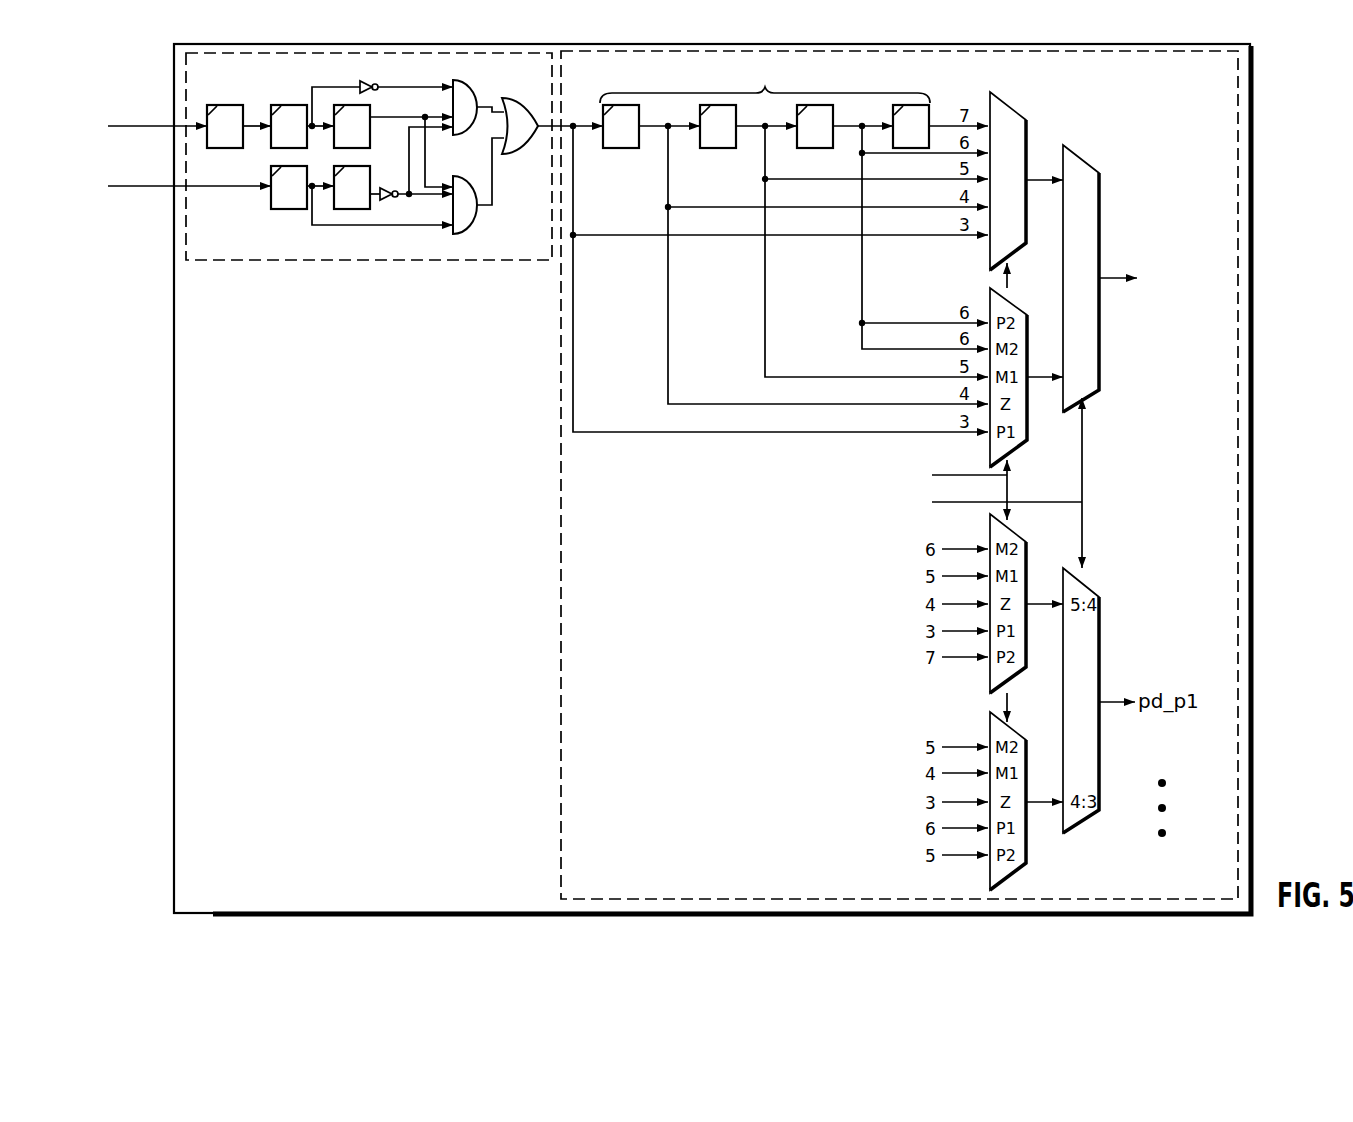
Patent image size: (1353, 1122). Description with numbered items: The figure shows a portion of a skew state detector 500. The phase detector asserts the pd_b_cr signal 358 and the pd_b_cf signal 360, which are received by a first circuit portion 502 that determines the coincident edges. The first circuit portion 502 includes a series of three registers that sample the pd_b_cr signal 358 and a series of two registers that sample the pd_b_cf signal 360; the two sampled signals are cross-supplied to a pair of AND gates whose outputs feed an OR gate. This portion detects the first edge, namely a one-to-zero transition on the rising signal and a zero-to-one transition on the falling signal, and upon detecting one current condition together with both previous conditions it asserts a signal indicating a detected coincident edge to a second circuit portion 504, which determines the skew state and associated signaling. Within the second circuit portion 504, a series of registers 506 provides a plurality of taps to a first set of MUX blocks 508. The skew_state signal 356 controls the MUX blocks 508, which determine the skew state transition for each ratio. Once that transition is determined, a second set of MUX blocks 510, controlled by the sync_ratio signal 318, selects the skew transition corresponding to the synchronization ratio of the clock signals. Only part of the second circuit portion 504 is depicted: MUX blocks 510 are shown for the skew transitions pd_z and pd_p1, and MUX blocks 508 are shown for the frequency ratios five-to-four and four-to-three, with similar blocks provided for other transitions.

The skew state detector 500 is at (1256, 86).
The first circuit portion 502 is at (325, 262).
The second circuit portion 504 is at (1242, 122).
The series of registers 506 is at (781, 80).
The first set of MUX blocks 508 is at (1023, 106).
The second set of MUX blocks 510 is at (1092, 153).
The pd_b_cr signal 358 is at (152, 92).
The pd_b_cf signal 360 is at (152, 182).
The skew_state signal 356 is at (833, 472).
The sync_ratio signal 318 is at (842, 498).